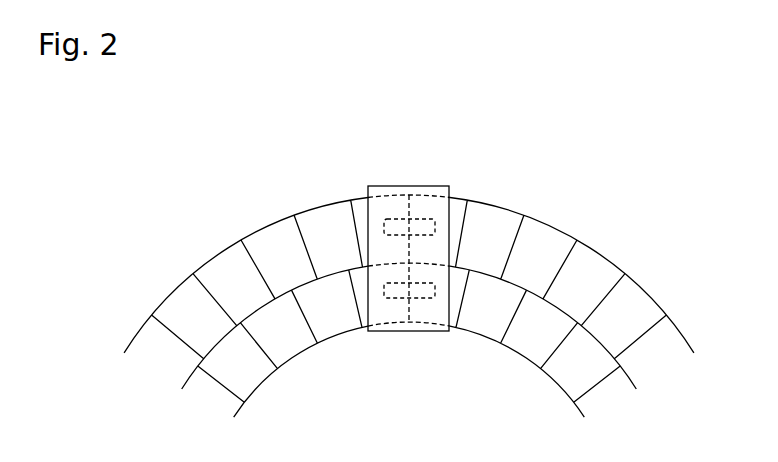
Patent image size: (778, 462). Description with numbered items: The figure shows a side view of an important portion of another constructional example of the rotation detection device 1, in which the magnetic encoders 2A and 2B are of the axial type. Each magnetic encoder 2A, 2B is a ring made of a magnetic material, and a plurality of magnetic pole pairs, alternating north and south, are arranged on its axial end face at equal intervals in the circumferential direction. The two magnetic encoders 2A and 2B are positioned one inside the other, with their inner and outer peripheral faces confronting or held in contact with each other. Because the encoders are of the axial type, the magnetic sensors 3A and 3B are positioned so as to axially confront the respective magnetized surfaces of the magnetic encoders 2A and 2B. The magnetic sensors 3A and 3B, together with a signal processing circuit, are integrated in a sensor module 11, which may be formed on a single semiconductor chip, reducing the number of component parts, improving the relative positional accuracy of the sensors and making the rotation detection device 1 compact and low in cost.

The rotation detection device 1 is at (262, 162).
The magnetic encoder 2A is at (228, 247).
The magnetic encoder 2B is at (295, 357).
The sensor module 11 is at (383, 176).
The magnetic sensor 3A is at (422, 218).
The magnetic sensor 3B is at (421, 299).